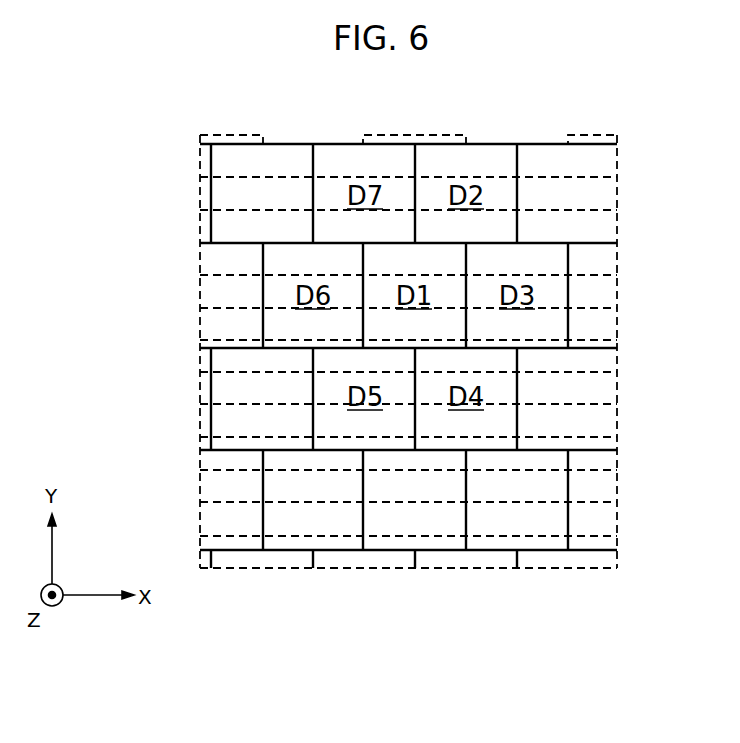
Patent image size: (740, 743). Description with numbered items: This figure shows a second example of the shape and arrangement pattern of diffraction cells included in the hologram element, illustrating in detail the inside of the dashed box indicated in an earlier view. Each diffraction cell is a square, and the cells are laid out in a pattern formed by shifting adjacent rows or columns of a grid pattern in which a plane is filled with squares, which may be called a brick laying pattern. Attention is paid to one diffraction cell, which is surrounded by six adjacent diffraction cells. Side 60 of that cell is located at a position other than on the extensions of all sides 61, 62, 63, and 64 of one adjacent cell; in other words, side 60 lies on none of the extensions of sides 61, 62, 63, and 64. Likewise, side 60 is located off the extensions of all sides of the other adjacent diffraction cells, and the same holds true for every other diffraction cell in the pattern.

The side 60 is at (467, 323).
The side 61 is at (413, 165).
The side 62 is at (485, 140).
The side 63 is at (517, 192).
The side 64 is at (497, 244).